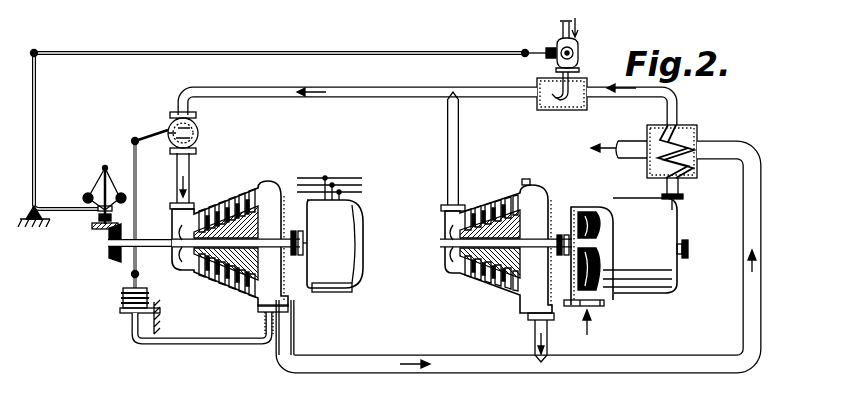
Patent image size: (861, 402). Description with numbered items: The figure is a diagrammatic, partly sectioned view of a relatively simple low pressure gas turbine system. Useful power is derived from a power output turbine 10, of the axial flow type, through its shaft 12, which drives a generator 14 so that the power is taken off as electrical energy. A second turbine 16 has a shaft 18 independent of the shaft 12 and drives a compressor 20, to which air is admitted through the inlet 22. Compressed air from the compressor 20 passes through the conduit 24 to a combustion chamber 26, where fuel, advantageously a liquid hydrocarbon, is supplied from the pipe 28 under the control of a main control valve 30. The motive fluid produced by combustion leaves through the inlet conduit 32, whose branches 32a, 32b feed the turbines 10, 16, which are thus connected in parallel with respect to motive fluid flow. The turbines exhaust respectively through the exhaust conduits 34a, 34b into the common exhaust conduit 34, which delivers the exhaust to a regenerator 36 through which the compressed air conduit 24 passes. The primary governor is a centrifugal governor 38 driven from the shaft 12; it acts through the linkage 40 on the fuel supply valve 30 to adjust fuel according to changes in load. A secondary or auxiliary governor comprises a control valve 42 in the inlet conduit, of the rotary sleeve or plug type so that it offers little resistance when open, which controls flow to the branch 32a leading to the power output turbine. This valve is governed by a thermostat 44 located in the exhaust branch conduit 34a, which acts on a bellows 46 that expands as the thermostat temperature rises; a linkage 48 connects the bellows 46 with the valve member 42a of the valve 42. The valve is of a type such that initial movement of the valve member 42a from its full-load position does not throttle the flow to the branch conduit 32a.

The power output turbine 10 is at (226, 203).
The shaft 12 is at (287, 254).
The generator 14 is at (348, 266).
The second turbine 16 is at (490, 203).
The shaft 18 is at (538, 246).
The compressor 20 is at (633, 200).
The inlet 22 is at (578, 288).
The conduit 24 is at (622, 98).
The combustion chamber 26 is at (572, 110).
The pipe 28 is at (557, 34).
The main control valve 30 is at (579, 56).
The inlet conduit 32 is at (347, 86).
The branch 32a is at (190, 166).
The branch 32b is at (460, 138).
The exhaust conduit 34 is at (665, 357).
The exhaust conduit 34a is at (291, 336).
The exhaust conduit 34b is at (534, 336).
The regenerator 36 is at (690, 125).
The centrifugal governor 38 is at (98, 180).
The linkage 40 is at (215, 53).
The control valve 42 is at (198, 130).
The valve member 42a is at (168, 129).
The thermostat 44 is at (264, 328).
The bellows 46 is at (121, 297).
The linkage 48 is at (137, 170).